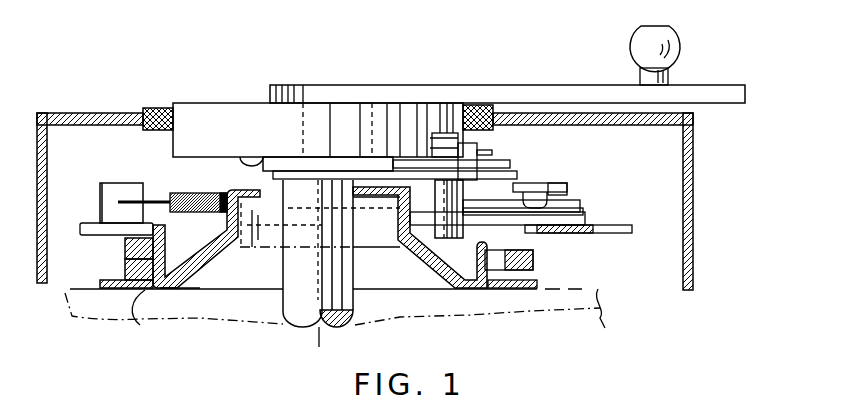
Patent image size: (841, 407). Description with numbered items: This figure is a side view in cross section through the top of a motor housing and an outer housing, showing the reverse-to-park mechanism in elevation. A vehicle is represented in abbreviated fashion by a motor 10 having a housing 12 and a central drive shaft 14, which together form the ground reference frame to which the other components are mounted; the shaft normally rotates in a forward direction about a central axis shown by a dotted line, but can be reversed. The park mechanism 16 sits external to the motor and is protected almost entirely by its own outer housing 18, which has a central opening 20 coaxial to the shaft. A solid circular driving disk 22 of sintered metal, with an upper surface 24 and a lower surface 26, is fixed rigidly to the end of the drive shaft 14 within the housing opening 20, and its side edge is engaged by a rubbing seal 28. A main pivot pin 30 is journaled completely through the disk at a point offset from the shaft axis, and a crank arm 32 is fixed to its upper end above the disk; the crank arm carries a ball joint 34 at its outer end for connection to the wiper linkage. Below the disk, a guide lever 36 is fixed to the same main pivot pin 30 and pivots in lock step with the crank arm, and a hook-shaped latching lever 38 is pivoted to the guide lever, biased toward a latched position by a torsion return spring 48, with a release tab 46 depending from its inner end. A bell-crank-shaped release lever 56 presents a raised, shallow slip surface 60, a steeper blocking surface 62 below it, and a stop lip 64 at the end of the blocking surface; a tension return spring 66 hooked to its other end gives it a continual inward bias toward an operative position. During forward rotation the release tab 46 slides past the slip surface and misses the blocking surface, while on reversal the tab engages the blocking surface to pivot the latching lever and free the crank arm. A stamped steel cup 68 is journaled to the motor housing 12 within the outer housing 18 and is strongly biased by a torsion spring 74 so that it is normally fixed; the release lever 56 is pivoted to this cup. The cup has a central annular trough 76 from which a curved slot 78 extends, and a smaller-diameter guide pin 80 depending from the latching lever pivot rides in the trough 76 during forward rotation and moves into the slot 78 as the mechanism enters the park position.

The motor 10 is at (598, 283).
The motor housing 12 is at (143, 292).
The central drive shaft 14 is at (343, 296).
The park mechanism 16 is at (596, 163).
The outer housing 18 is at (693, 217).
The central opening 20 is at (173, 113).
The driving disk 22 is at (233, 95).
The upper surface 24 is at (246, 102).
The lower surface 26 is at (266, 157).
The rubbing seal 28 is at (483, 105).
The main pivot pin 30 is at (372, 103).
The crank arm 32 is at (717, 115).
The ball joint 34 is at (638, 47).
The guide lever 36 is at (527, 160).
The latching lever 38 is at (504, 150).
The release tab 46 is at (487, 197).
The torsion return spring 48 is at (443, 153).
The release lever 56 is at (540, 190).
The slip surface 60 is at (540, 172).
The blocking surface 62 is at (548, 192).
The stop lip 64 is at (568, 197).
The spring 66 is at (182, 193).
The cup 68 is at (192, 300).
The torsion spring 74 is at (127, 267).
The annular trough 76 is at (200, 264).
The curved slot 78 is at (527, 238).
The guide pin 80 is at (444, 230).